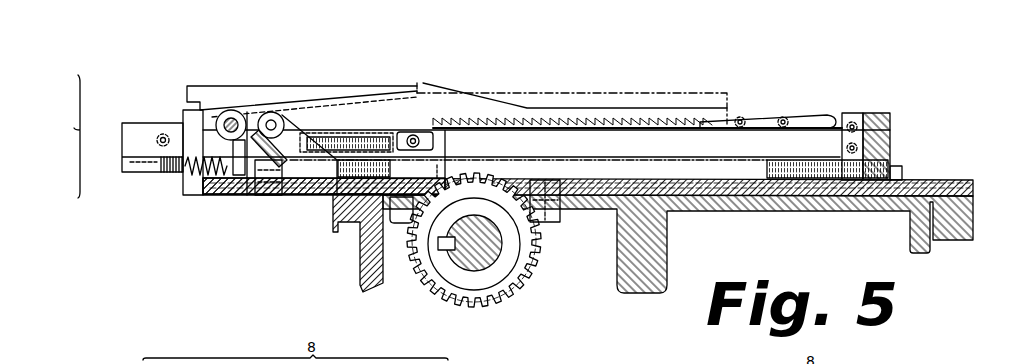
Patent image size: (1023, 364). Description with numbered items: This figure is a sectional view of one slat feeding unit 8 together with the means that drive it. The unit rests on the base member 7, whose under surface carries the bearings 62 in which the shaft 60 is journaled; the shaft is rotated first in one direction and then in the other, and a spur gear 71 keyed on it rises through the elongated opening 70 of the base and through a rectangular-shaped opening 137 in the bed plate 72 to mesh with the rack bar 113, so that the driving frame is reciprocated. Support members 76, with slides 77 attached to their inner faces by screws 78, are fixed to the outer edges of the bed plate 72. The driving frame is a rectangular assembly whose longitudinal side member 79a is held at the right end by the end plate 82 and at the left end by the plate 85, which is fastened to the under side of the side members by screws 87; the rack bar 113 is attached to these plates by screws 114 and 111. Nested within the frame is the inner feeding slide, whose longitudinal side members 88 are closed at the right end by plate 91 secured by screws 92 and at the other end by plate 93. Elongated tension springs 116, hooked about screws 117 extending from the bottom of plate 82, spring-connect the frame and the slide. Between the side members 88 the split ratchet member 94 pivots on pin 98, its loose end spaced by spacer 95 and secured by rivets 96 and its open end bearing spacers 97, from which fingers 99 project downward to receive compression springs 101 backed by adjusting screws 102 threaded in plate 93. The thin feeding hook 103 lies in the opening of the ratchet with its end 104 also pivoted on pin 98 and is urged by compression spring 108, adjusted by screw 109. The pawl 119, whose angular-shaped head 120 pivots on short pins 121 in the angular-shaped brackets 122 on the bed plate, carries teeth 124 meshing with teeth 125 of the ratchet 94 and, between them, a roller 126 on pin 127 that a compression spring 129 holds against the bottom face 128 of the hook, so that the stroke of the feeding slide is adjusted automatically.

The base member 7 is at (764, 208).
The slat feeding unit 8 is at (68, 136).
The shaft 60 is at (460, 258).
The bearings 62 is at (560, 218).
The elongated opening 70 is at (410, 223).
The spur gear 71 is at (522, 245).
The bed plate 72 is at (345, 202).
The support members 76 is at (122, 170).
The slides 77 is at (122, 127).
The screws 78 is at (150, 134).
The carriage top 79a is at (205, 86).
The end plate 82 is at (890, 113).
The plate 85 is at (252, 197).
The screws 87 is at (240, 190).
The longitudinal side members 88 is at (834, 116).
The plate 91 is at (846, 146).
The screws 92 is at (853, 118).
The plate 93 is at (177, 118).
The split ratchet member 94 is at (485, 108).
The spacer 95 is at (756, 130).
The rivets 96 is at (780, 118).
The spacers 97 is at (268, 112).
The pin 98 is at (231, 110).
The fingers 99 is at (194, 152).
The compression springs 101 is at (200, 172).
The adjusting screws 102 is at (183, 158).
The feeding hook 103 is at (418, 82).
The end 104 is at (235, 110).
The compression spring 108 is at (214, 164).
The adjusting screw 109 is at (162, 165).
The screws 111 is at (266, 195).
The rack bar 113 is at (898, 166).
The screws 114 is at (891, 132).
The tension springs 116 is at (798, 150).
The screws 117 is at (900, 172).
The pawl 119 is at (372, 136).
The angular-shaped head 120 is at (277, 95).
The short pins 121 is at (305, 128).
The angular-shaped brackets 122 is at (338, 136).
The teeth 124 is at (436, 120).
The teeth 125 is at (483, 128).
The roller 126 is at (412, 134).
The pin 127 is at (434, 141).
The bottom face 128 is at (537, 128).
The compression spring 129 is at (447, 164).
The rectangular-shaped opening 137 is at (442, 168).